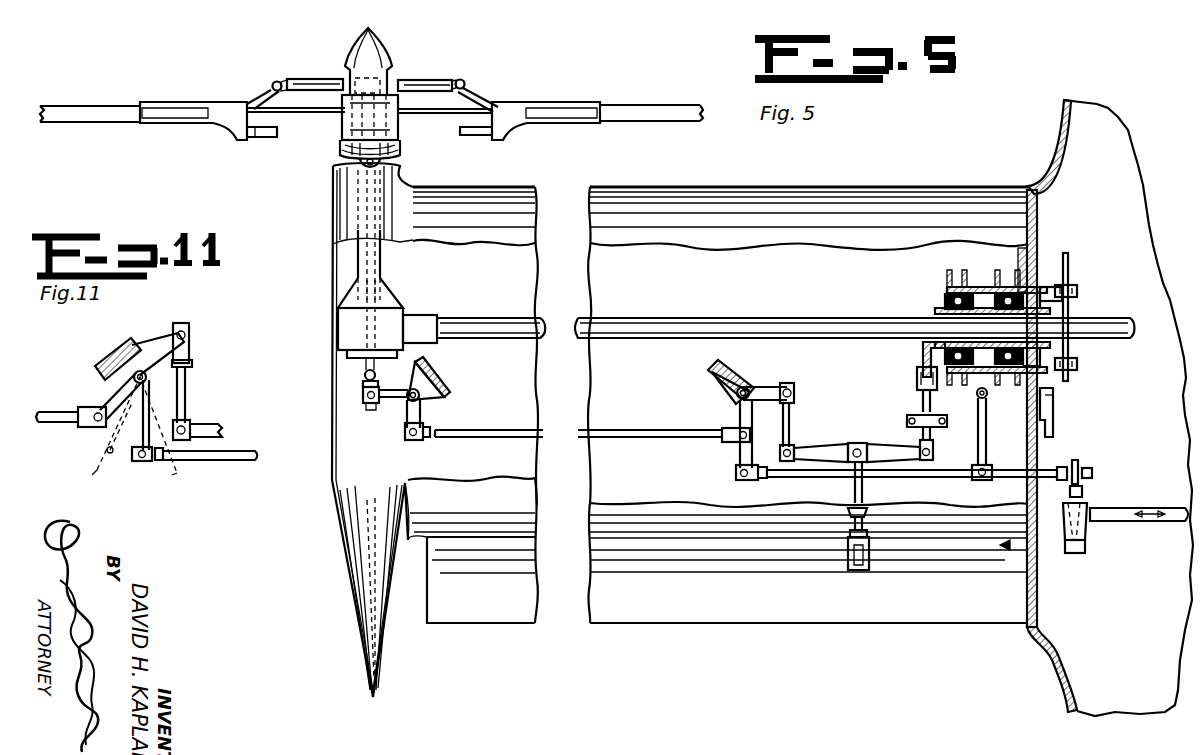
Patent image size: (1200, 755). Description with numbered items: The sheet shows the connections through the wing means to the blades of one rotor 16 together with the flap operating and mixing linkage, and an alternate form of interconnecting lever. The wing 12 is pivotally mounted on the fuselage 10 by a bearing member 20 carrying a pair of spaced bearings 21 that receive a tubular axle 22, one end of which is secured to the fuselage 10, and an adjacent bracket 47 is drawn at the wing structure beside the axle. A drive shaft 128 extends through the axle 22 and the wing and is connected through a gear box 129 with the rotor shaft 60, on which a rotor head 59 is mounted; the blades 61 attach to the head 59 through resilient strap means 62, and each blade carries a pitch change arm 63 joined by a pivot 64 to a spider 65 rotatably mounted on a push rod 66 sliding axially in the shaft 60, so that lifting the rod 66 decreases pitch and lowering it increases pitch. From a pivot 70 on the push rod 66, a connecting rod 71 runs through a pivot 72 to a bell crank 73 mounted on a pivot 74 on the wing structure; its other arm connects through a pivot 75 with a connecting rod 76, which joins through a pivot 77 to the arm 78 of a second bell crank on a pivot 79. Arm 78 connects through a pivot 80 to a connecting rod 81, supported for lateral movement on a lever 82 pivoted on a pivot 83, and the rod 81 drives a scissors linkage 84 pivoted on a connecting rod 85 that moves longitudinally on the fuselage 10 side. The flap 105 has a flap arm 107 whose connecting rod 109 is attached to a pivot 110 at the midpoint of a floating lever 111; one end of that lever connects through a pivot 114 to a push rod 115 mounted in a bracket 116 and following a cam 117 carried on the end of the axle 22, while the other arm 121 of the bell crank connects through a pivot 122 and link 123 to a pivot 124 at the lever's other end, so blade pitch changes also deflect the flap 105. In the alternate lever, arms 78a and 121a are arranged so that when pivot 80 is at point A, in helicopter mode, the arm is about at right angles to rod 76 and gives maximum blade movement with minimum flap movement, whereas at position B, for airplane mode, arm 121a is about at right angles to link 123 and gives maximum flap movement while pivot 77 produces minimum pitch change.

In FIG. 5, the fuselage 10 is at (1060, 150).
In FIG. 5, the wing 12 is at (450, 390).
In FIG. 5, the rotor 16 is at (522, 88).
In FIG. 5, the bearing member 20 is at (1040, 283).
In FIG. 5, the bearings 21 is at (950, 300).
In FIG. 5, the axle 22 is at (1072, 312).
In FIG. 5, the bracket 47 is at (1053, 418).
In FIG. 5, the rotor head 59 is at (404, 44).
In FIG. 5, the rotor shaft 60 is at (358, 262).
In FIG. 5, the blades 61 is at (197, 123).
In FIG. 5, the strap means 62 is at (316, 115).
In FIG. 5, the pitch change arm 63 is at (262, 94).
In FIG. 5, the pivot 64 is at (279, 82).
In FIG. 5, the spider 65 is at (316, 85).
In FIG. 5, the push rod 66 is at (352, 157).
In FIG. 5, the pivot 70 is at (365, 377).
In FIG. 5, the connecting rod 71 is at (362, 385).
In FIG. 5, the pivot 72 is at (362, 398).
In FIG. 5, the bell crank 73 is at (393, 400).
In FIG. 5, the pivot 74 is at (430, 398).
In FIG. 5, the pivot 75 is at (408, 440).
In FIG. 5, the connecting rod 76 is at (578, 438).
In FIG. 11, the connecting rod 76 is at (67, 408).
In FIG. 5, the pivot 77 is at (736, 440).
In FIG. 11, the pivot 77 is at (97, 424).
In FIG. 5, the arm 78 is at (740, 419).
In FIG. 11, the arm 78 is at (130, 425).
In FIG. 11, the arm 78a is at (115, 397).
In FIG. 5, the pivot 79 is at (735, 396).
In FIG. 11, the pivot 79 is at (189, 378).
In FIG. 5, the pivot 80 is at (736, 473).
In FIG. 11, the pivot 80 is at (140, 461).
In FIG. 5, the connecting rod 81 is at (918, 470).
In FIG. 11, the connecting rod 81 is at (210, 461).
In FIG. 5, the lever 82 is at (978, 441).
In FIG. 5, the pivot 83 is at (990, 398).
In FIG. 5, the scissors linkage 84 is at (1088, 540).
In FIG. 5, the connecting rod 85 is at (1125, 506).
In FIG. 5, the flap 105 is at (772, 613).
In FIG. 5, the flap arm 107 is at (860, 570).
In FIG. 5, the connecting rod 109 is at (855, 488).
In FIG. 5, the pivot 110 is at (857, 443).
In FIG. 5, the floating lever 111 is at (838, 428).
In FIG. 11, the floating lever 111 is at (220, 424).
In FIG. 5, the pivot 114 is at (920, 445).
In FIG. 5, the push rod 115 is at (922, 402).
In FIG. 5, the bracket 116 is at (935, 415).
In FIG. 5, the cam 117 is at (925, 355).
In FIG. 5, the arm 121 is at (765, 385).
In FIG. 11, the arm 121a is at (153, 357).
In FIG. 5, the pivot 122 is at (792, 386).
In FIG. 11, the pivot 122 is at (187, 330).
In FIG. 5, the link 123 is at (790, 410).
In FIG. 11, the link 123 is at (186, 400).
In FIG. 5, the pivot 124 is at (795, 440).
In FIG. 5, the drive shaft 128 is at (578, 318).
In FIG. 5, the gear box 129 is at (345, 325).
In FIG. 11, the point A is at (165, 484).
In FIG. 11, the position B is at (85, 478).